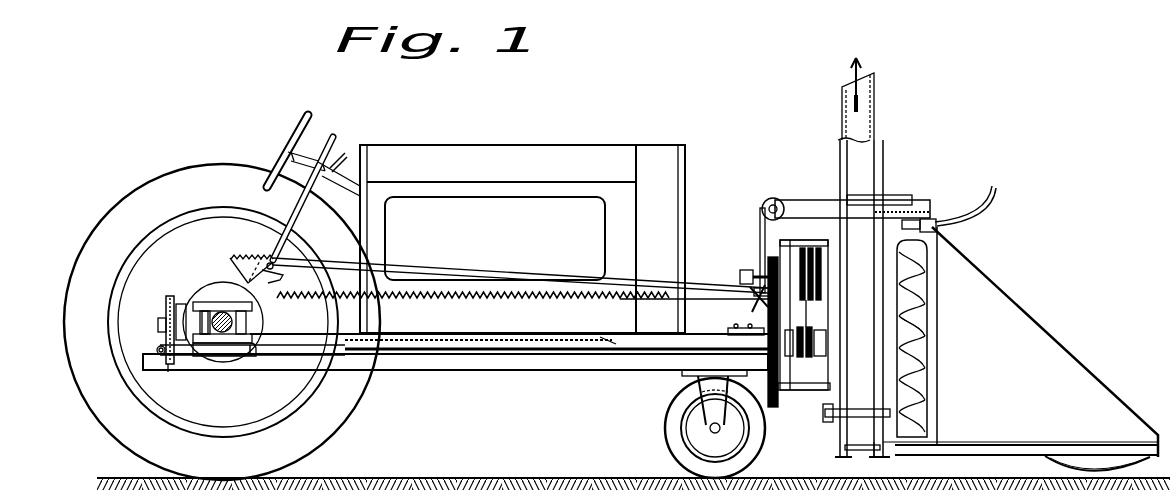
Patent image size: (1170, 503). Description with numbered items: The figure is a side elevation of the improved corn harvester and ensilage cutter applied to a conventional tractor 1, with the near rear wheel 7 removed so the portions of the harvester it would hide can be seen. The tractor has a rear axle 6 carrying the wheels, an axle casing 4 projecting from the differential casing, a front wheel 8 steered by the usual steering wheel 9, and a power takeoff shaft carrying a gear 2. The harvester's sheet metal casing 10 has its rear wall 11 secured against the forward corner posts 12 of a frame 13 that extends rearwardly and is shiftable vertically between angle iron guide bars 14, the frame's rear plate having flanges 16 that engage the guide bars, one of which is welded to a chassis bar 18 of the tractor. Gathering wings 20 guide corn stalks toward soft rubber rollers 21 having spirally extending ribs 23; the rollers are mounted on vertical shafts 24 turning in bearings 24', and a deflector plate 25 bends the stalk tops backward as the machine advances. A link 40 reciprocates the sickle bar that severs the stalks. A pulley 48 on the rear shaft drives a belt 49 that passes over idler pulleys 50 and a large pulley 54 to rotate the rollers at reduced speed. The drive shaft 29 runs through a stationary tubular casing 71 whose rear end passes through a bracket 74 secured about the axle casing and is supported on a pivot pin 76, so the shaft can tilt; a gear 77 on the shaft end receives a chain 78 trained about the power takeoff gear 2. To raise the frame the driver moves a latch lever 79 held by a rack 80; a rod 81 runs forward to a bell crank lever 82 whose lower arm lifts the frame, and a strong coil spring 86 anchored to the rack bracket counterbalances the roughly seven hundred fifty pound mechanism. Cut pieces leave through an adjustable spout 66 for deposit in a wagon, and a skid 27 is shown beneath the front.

The tractor 1 is at (548, 120).
The gear 2 is at (167, 300).
The axle casing 4 is at (254, 323).
The rear axle 6 is at (220, 311).
The wheel 7 is at (95, 402).
The front wheel 8 is at (667, 419).
The steering wheel 9 is at (301, 119).
The casing 10 is at (858, 240).
The rear wall 11 is at (430, 363).
The forward corner post 12 is at (844, 432).
The frame 13 is at (817, 392).
The guide bar 14 is at (762, 398).
The flange 16 is at (994, 448).
The chassis bar 18 is at (541, 365).
The gathering wing 20 is at (1012, 330).
The roller 21 is at (937, 334).
The spirally extending rib 23 is at (937, 384).
The shaft 24 is at (950, 226).
The bearing 24' is at (964, 308).
The deflector plate 25 is at (996, 186).
The skid 27 is at (1140, 462).
The drive shaft 29 is at (492, 345).
The link 40 is at (830, 325).
The pulley 48 is at (758, 258).
The belt 49 is at (808, 199).
The idler pulley 50 is at (767, 201).
The large pulley 54 is at (914, 191).
The adjustable spout 66 is at (866, 120).
The tubular casing 71 is at (298, 358).
The bracket 74 is at (214, 344).
The pivot pin 76 is at (152, 349).
The gear 77 is at (167, 364).
The chain 78 is at (168, 322).
The latch lever 79 is at (328, 138).
The rack 80 is at (246, 258).
The rod 81 is at (530, 274).
The bell crank lever 82 is at (755, 315).
The coil spring 86 is at (439, 287).